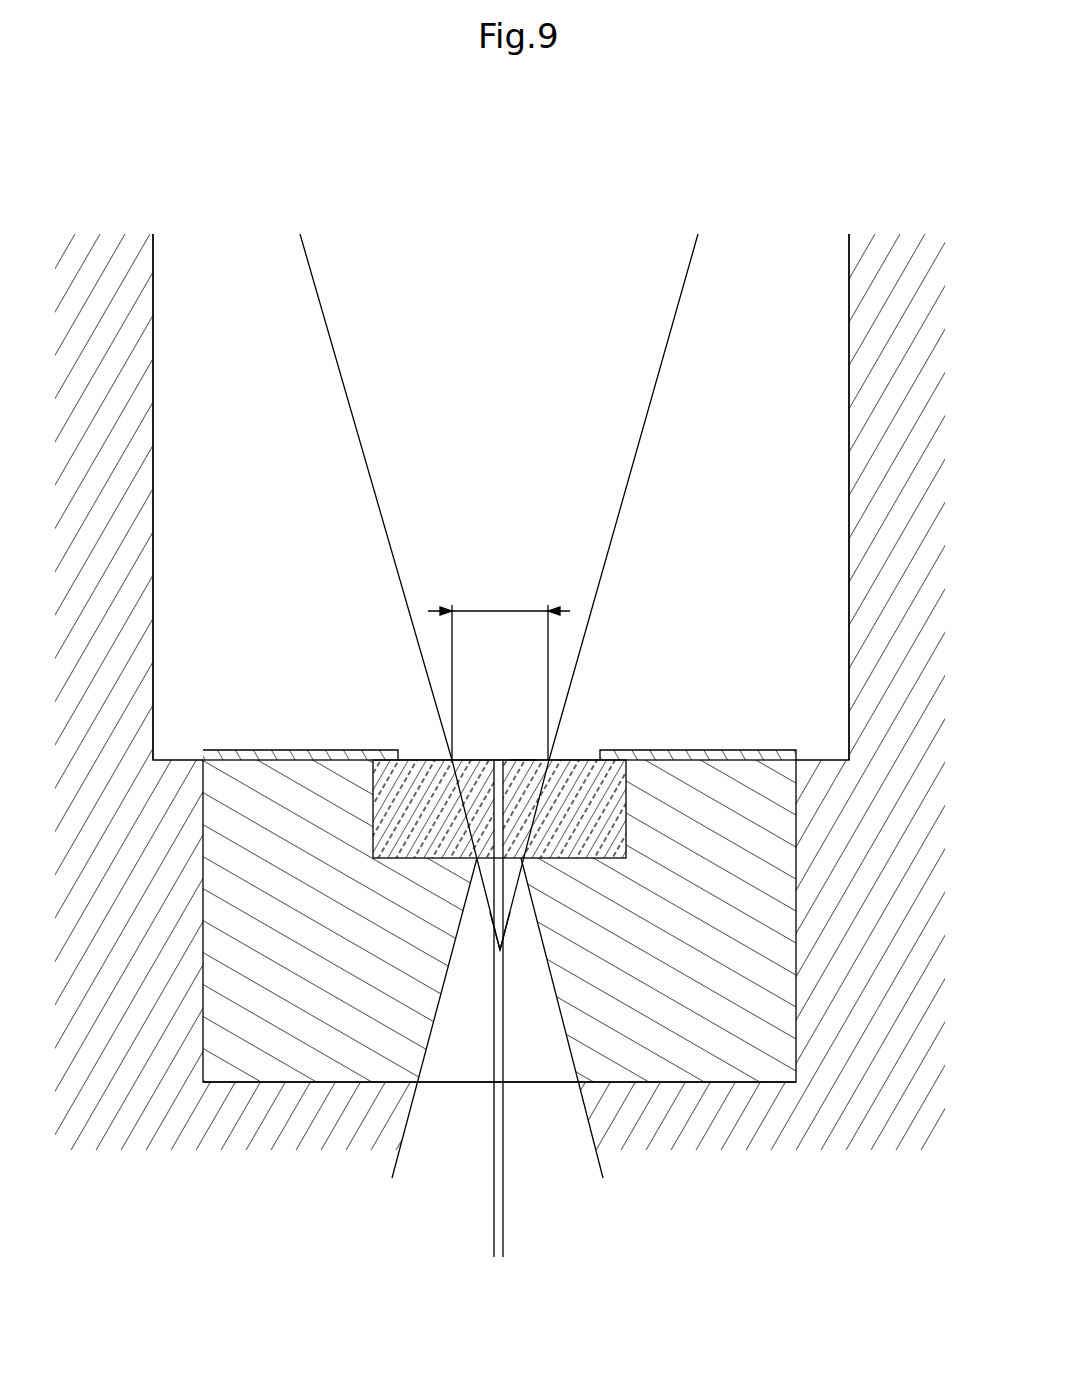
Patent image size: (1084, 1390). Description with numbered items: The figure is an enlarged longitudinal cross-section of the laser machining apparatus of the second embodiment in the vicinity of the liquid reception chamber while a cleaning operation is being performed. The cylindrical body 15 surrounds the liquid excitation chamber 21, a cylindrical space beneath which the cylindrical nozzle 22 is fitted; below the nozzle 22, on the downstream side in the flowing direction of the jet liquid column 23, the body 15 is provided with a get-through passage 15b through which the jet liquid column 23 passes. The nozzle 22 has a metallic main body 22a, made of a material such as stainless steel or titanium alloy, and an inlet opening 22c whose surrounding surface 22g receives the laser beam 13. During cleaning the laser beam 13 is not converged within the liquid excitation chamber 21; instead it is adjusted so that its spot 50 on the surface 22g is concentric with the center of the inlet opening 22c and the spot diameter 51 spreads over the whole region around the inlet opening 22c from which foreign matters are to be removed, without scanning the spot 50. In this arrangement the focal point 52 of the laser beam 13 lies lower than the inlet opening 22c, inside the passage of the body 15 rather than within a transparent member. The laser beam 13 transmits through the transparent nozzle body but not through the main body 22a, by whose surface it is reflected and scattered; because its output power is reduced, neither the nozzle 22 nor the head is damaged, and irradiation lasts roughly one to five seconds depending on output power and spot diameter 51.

The laser beam 13 is at (354, 424).
The cylindrical body 15 is at (803, 1148).
The get-through passage 15b is at (397, 1165).
The liquid excitation chamber 21 is at (241, 592).
The nozzle 22 is at (702, 747).
The main body 22a is at (371, 1122).
The inlet opening 22c is at (500, 760).
The surface 22g is at (412, 760).
The jet liquid column 23 is at (504, 1234).
The spot 50 is at (523, 760).
The spot diameter 51 is at (502, 610).
The focal point 52 is at (505, 955).